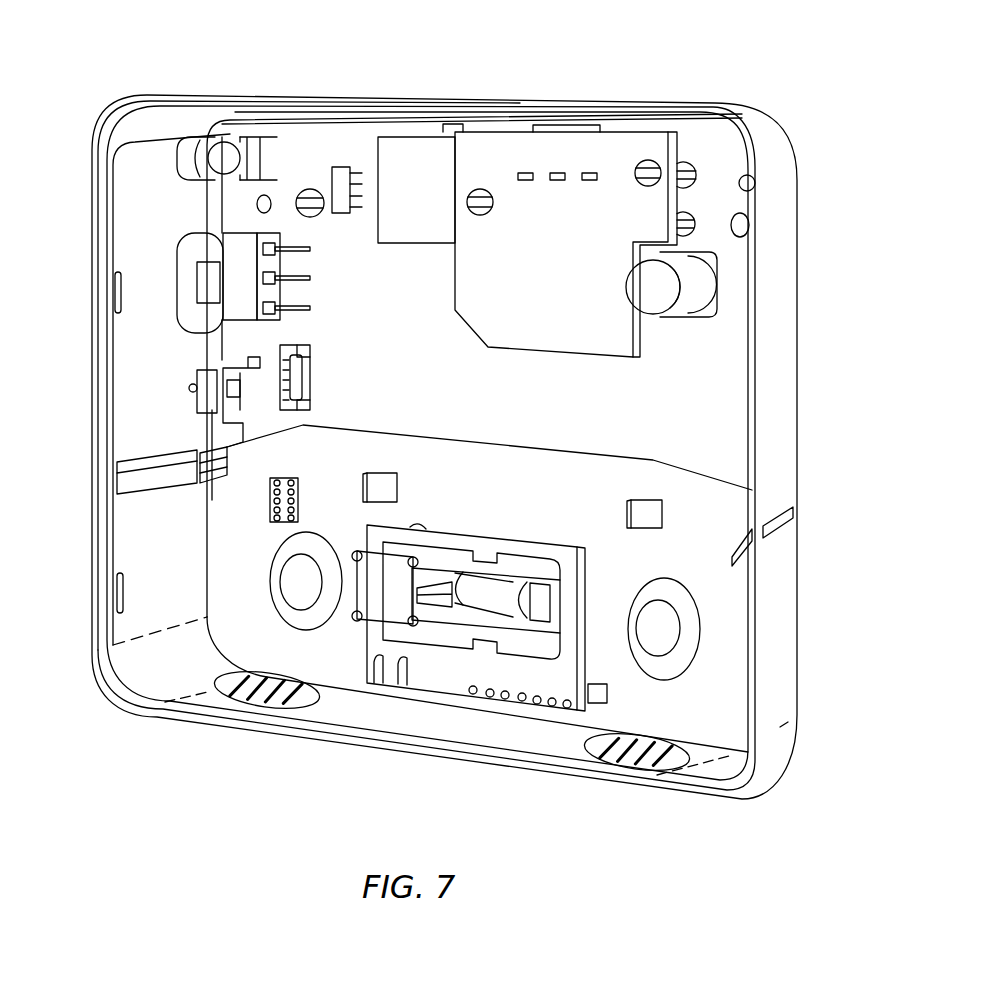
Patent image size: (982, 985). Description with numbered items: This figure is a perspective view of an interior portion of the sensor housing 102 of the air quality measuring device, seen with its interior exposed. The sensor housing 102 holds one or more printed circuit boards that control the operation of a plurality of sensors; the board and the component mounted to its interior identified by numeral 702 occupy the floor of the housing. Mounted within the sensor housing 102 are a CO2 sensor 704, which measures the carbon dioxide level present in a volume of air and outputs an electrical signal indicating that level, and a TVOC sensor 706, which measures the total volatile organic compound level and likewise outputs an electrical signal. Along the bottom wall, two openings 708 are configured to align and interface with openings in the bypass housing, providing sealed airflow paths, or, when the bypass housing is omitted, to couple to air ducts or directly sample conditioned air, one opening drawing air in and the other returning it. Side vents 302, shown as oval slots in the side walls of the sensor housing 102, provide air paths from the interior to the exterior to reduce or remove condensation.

The sensor housing 102 is at (104, 41).
The side vent 302 is at (146, 458).
The circuit board 702 is at (703, 360).
The CO2 sensor 704 is at (513, 642).
The TVOC sensor 706 is at (265, 503).
The opening 708 is at (253, 703).